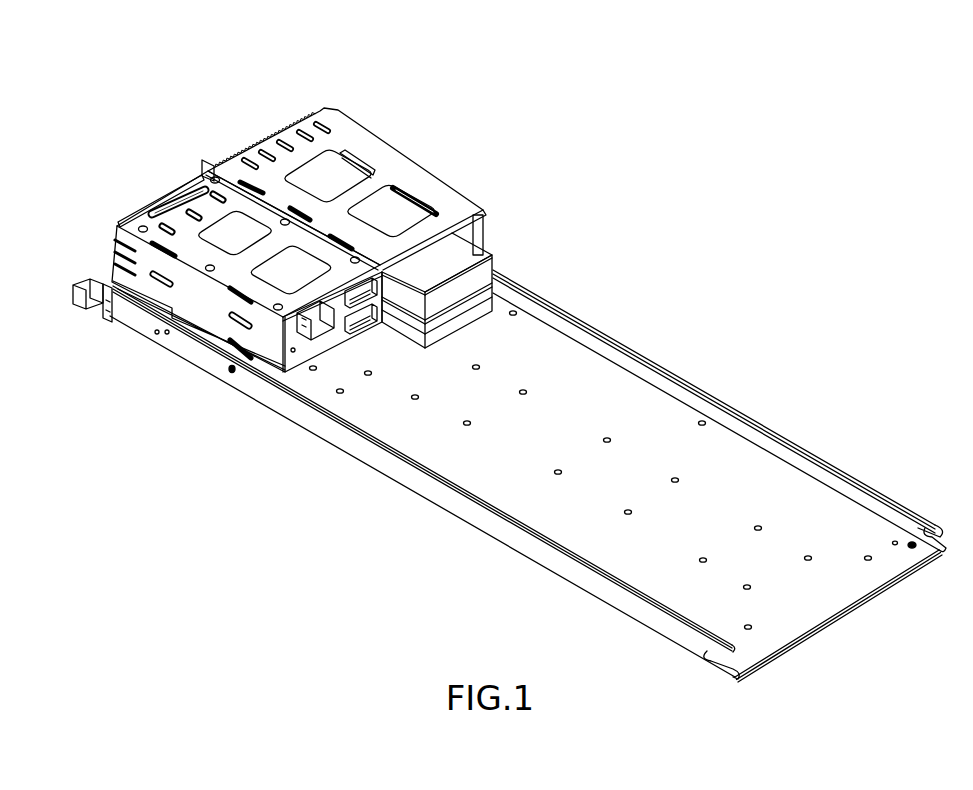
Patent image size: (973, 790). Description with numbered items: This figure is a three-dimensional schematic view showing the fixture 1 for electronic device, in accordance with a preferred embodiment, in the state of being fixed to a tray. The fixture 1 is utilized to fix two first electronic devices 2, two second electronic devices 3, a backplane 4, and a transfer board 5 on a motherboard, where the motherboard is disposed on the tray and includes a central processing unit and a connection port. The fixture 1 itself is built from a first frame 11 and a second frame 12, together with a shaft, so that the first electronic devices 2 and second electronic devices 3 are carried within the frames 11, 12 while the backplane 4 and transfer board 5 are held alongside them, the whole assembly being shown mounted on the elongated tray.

The fixture for electronic device 1 is at (249, 135).
The first electronic device 2 is at (164, 198).
The second electronic device 3 is at (403, 208).
The backplane 4 is at (300, 357).
The transfer board 5 is at (473, 228).
The first frame 11 is at (207, 313).
The second frame 12 is at (397, 172).